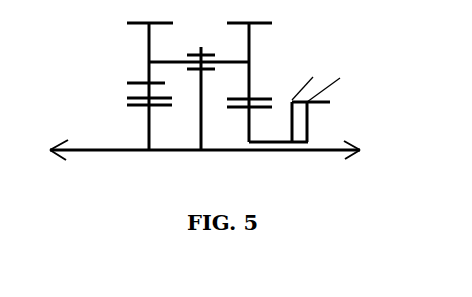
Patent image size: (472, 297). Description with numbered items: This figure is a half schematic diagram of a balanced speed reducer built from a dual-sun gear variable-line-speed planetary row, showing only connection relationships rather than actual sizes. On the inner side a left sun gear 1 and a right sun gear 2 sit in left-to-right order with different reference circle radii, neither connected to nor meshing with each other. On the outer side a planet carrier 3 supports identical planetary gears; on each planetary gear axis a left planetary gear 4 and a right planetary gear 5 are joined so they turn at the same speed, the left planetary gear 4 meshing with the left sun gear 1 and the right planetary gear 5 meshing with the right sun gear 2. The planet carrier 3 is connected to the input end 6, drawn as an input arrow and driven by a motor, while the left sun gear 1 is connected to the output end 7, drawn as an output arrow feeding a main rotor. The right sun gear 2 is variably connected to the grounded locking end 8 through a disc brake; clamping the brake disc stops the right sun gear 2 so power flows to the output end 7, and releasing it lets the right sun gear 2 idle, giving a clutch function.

The left sun gear 1 is at (145, 110).
The right sun gear 2 is at (243, 110).
The planet carrier 3 is at (192, 69).
The left planetary gear 4 is at (145, 30).
The right planetary gear 5 is at (252, 25).
The input end 6 is at (352, 158).
The output end 7 is at (58, 158).
The locking end 8 is at (310, 125).